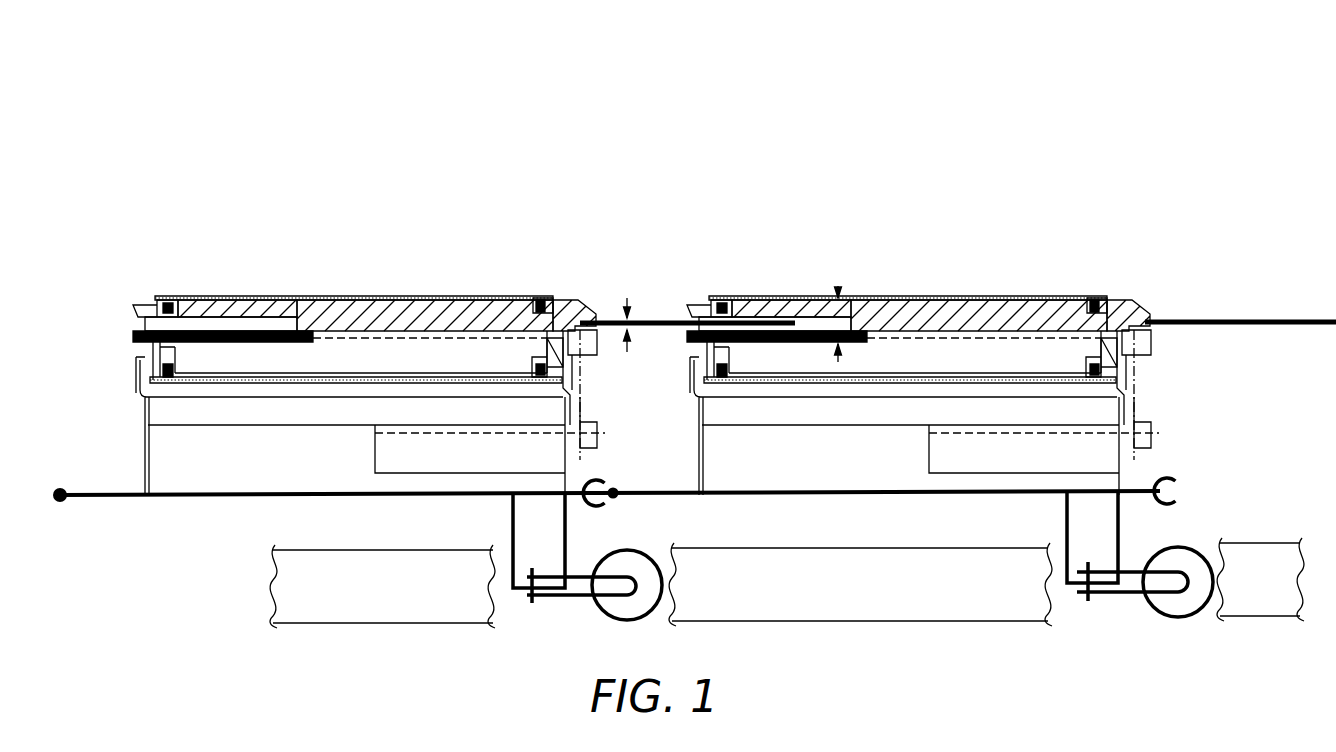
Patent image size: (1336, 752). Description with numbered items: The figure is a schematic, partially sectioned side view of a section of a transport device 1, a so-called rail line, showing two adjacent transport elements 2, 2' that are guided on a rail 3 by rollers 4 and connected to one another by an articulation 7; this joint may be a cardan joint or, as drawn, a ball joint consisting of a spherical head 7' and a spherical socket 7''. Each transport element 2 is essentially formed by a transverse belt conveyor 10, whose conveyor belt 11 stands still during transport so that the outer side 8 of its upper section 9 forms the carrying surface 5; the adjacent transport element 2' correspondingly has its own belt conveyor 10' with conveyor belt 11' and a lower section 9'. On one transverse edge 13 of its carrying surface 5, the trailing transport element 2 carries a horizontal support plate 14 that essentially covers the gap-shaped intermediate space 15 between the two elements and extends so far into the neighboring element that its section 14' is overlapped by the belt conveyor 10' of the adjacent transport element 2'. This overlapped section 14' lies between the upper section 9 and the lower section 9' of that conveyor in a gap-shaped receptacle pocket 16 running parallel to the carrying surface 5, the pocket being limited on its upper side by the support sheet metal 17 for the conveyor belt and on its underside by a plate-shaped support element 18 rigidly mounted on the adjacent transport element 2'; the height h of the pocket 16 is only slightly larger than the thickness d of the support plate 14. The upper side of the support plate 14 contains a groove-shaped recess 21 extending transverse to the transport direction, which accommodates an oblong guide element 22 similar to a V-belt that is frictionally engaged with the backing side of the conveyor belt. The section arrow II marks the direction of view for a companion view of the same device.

The transport device 1 is at (1187, 270).
The transport element 2 is at (278, 251).
The adjacent transport element 2' is at (845, 299).
The rail 3 is at (423, 610).
The rollers 4 is at (622, 598).
The carrying surface 5 is at (233, 297).
The articulation 7 is at (610, 457).
The spherical head 7' is at (355, 499).
The spherical socket 7'' is at (913, 487).
The outer side of the upper section 8 is at (490, 298).
The upper section 9 is at (638, 338).
The lower section 9' is at (633, 418).
The belt conveyor 10 is at (108, 392).
The belt conveyor of the adjacent transport element 10' is at (1136, 296).
The conveyor belt 11 is at (259, 286).
The conveyor belt of the adjacent belt conveyor 11' is at (843, 254).
The transverse edge 13 is at (594, 300).
The support plate 14 is at (958, 297).
The overlapping section of the support plate 14' is at (757, 257).
The gap-shaped intermediate space 15 is at (606, 220).
The receptacle pocket 16 is at (193, 325).
The support sheet metal 17 is at (397, 320).
The plate-shaped support element 18 is at (263, 340).
The groove-shaped recess 21 is at (167, 300).
The oblong guide element 22 is at (160, 303).
The thickness of the support plate d is at (627, 352).
The height of the pocket h is at (838, 355).
The section line II is at (640, 195).